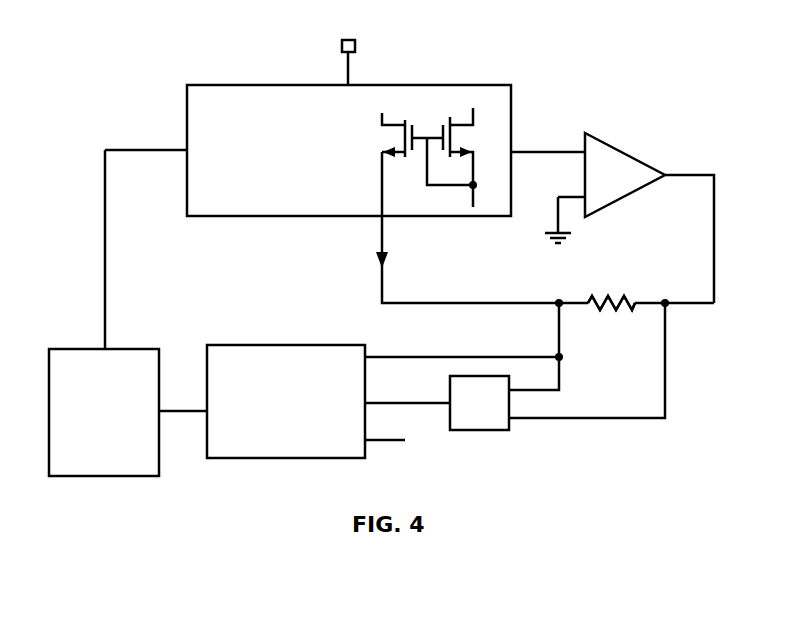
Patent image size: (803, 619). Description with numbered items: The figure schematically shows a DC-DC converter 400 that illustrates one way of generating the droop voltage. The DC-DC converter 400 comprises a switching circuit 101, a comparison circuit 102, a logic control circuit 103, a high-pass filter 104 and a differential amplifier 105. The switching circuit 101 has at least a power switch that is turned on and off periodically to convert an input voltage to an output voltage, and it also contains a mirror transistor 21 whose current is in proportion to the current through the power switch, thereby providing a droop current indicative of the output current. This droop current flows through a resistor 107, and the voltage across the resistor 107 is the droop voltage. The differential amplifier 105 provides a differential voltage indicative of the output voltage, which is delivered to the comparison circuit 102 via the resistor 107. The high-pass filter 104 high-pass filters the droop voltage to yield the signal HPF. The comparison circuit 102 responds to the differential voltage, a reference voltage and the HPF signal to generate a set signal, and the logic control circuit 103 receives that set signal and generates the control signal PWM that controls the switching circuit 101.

The DC-DC converter 400 is at (665, 57).
The switching circuit 101 is at (349, 150).
The mirror transistor 21 is at (413, 157).
The differential amplifier 105 is at (625, 175).
The resistor 107 is at (611, 321).
The high-pass filter 104 is at (479, 403).
The comparison circuit 102 is at (286, 401).
The logic control circuit 103 is at (104, 412).